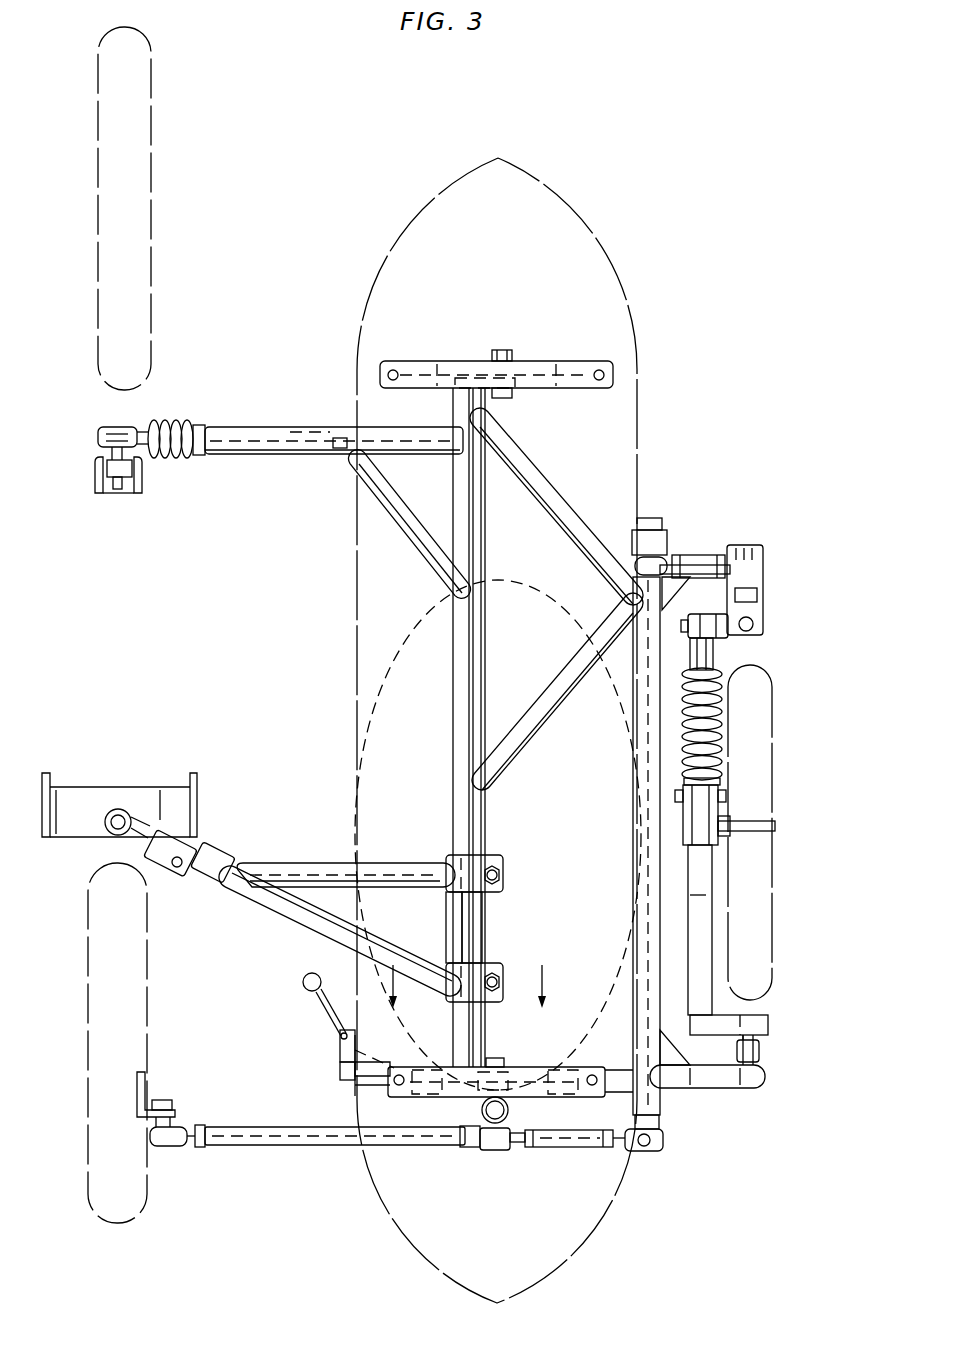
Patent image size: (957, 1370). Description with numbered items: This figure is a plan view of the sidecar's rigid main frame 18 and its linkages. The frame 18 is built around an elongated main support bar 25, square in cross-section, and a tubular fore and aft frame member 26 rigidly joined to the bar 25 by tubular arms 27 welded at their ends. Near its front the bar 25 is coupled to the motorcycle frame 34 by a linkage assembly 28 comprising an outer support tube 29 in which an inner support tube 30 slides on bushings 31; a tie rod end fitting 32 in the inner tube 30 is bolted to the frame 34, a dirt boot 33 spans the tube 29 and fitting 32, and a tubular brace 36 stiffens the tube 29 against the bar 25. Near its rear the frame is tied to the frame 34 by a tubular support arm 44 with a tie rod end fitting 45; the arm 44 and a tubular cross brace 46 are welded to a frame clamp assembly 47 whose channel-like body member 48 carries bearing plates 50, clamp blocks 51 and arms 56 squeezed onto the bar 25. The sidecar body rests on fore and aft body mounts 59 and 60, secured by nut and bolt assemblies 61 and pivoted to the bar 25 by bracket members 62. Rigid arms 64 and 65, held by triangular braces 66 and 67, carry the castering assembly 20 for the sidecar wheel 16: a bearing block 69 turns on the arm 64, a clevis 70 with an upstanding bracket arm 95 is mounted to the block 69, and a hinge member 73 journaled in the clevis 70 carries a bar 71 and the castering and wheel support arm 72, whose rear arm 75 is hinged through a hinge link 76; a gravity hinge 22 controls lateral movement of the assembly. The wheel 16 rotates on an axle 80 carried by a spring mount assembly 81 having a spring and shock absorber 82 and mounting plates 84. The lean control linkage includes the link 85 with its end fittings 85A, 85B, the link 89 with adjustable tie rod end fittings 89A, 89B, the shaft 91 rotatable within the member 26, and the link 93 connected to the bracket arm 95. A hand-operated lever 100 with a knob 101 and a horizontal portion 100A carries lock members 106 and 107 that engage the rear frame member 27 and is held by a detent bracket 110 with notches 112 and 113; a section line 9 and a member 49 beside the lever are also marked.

The section line 9- 9 is at (404, 985).
The sidecar wheel 16 is at (778, 843).
The main frame 18 is at (474, 727).
The castering assembly 20 is at (716, 922).
The gravity hinge 22 is at (771, 1052).
The main support bar 25 is at (484, 627).
The fore and aft frame member 26 is at (637, 853).
The tubular arms 27 is at (568, 502).
The linkage assembly 28 is at (280, 427).
The outer support tube 29 is at (290, 456).
The inner support tube 30 is at (290, 428).
The bushings 31 is at (334, 438).
The tie rod end fitting 32 is at (135, 428).
The dirt boot 33 is at (172, 421).
The motorcycle frame 34 is at (95, 478).
The tubular brace 36 is at (395, 526).
The tubular support arm 44 is at (262, 902).
The tie rod end fitting 45 is at (118, 836).
The tubular cross brace 46 is at (302, 872).
The frame clamp assembly 47 is at (448, 916).
The channel-like body member 48 is at (482, 914).
The support plate 49 is at (356, 1096).
The bearing plates 50 is at (456, 856).
The clamp blocks 51 is at (496, 858).
The arms 56 is at (504, 874).
The body mount 59 is at (436, 362).
The body mount 60 is at (496, 1072).
The nut and bolt assemblies 61 is at (389, 375).
The bracket members 62 is at (486, 362).
The forward arm 64 is at (726, 560).
The rigid arm 65 is at (718, 1082).
The triangular brace 66 is at (672, 562).
The triangular brace 67 is at (672, 1060).
The bearing block 69 is at (758, 546).
The clevis 70 is at (756, 620).
The bar 71 is at (760, 652).
The castering and wheel support arm 72 is at (704, 870).
The hinge member 73 is at (756, 636).
The arm 75 is at (745, 1016).
The hinge link 76 is at (758, 1044).
The axle 80 is at (776, 825).
The spring mount assembly 81 is at (728, 740).
The spring and shock absorber 82 is at (720, 756).
The mounting plates 84 is at (718, 806).
The link 85 is at (286, 1146).
The tie rod end 85A is at (166, 1150).
The tie rod ball joint 85B is at (488, 1150).
The link 89 is at (568, 1148).
The tie rod end fitting 89A is at (516, 1148).
The tie rod end fitting 89B is at (645, 1152).
The shaft 91 is at (633, 852).
The link 93 is at (700, 556).
The upstanding bracket arm 95 is at (758, 592).
The hand-operated lever 100 is at (318, 1000).
The horizontal portion 100A is at (392, 1062).
The knob 101 is at (304, 978).
The lock member 106 is at (424, 1068).
The lock member 107 is at (548, 1068).
The detent bracket 110 is at (338, 1050).
The detent notch 112 is at (340, 1070).
The detent notch 113 is at (340, 1036).